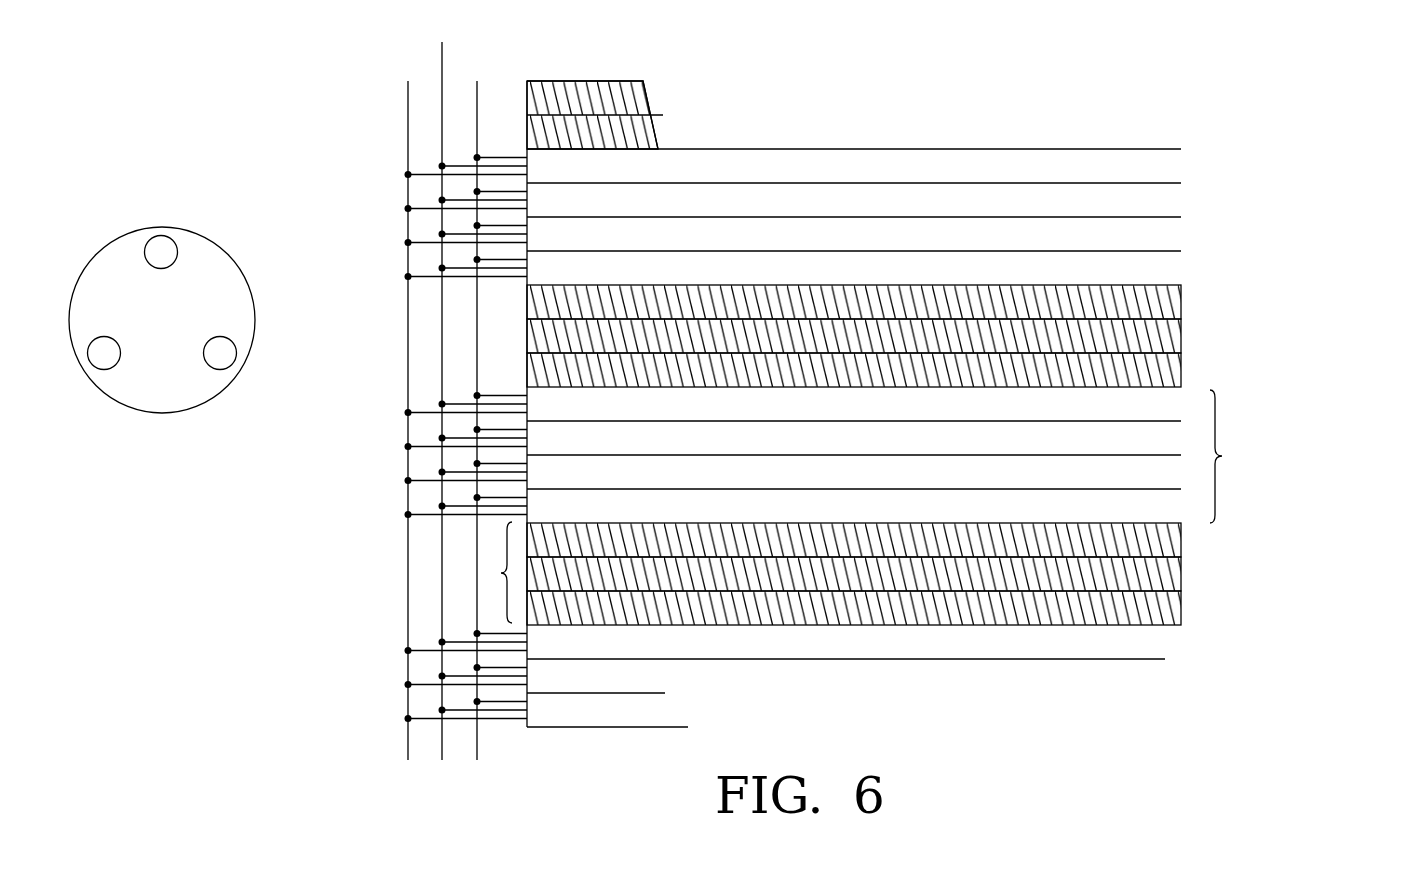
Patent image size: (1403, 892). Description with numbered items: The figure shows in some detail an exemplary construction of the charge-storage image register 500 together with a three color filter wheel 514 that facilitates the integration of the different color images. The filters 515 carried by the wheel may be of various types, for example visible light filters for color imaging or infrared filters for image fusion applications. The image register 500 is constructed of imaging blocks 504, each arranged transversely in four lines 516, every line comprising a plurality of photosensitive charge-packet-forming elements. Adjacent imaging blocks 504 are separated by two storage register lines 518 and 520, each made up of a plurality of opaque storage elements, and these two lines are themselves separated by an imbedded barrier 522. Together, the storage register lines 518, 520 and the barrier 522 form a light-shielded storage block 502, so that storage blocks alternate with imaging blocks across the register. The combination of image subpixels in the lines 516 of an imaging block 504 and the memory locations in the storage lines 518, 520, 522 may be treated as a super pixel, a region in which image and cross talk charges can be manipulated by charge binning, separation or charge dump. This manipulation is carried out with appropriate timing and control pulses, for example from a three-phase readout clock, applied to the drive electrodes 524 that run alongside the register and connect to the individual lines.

The image register 500 is at (854, 404).
The storage block 502 is at (502, 574).
The imaging block 504 is at (1248, 456).
The three color filter wheel 514 is at (96, 254).
The filters 515 is at (178, 257).
The lines 516 is at (912, 273).
The storage register line 518 is at (1188, 300).
The storage register line 520 is at (1188, 371).
The imbedded barrier 522 is at (1188, 336).
The drive electrodes 524 is at (477, 349).